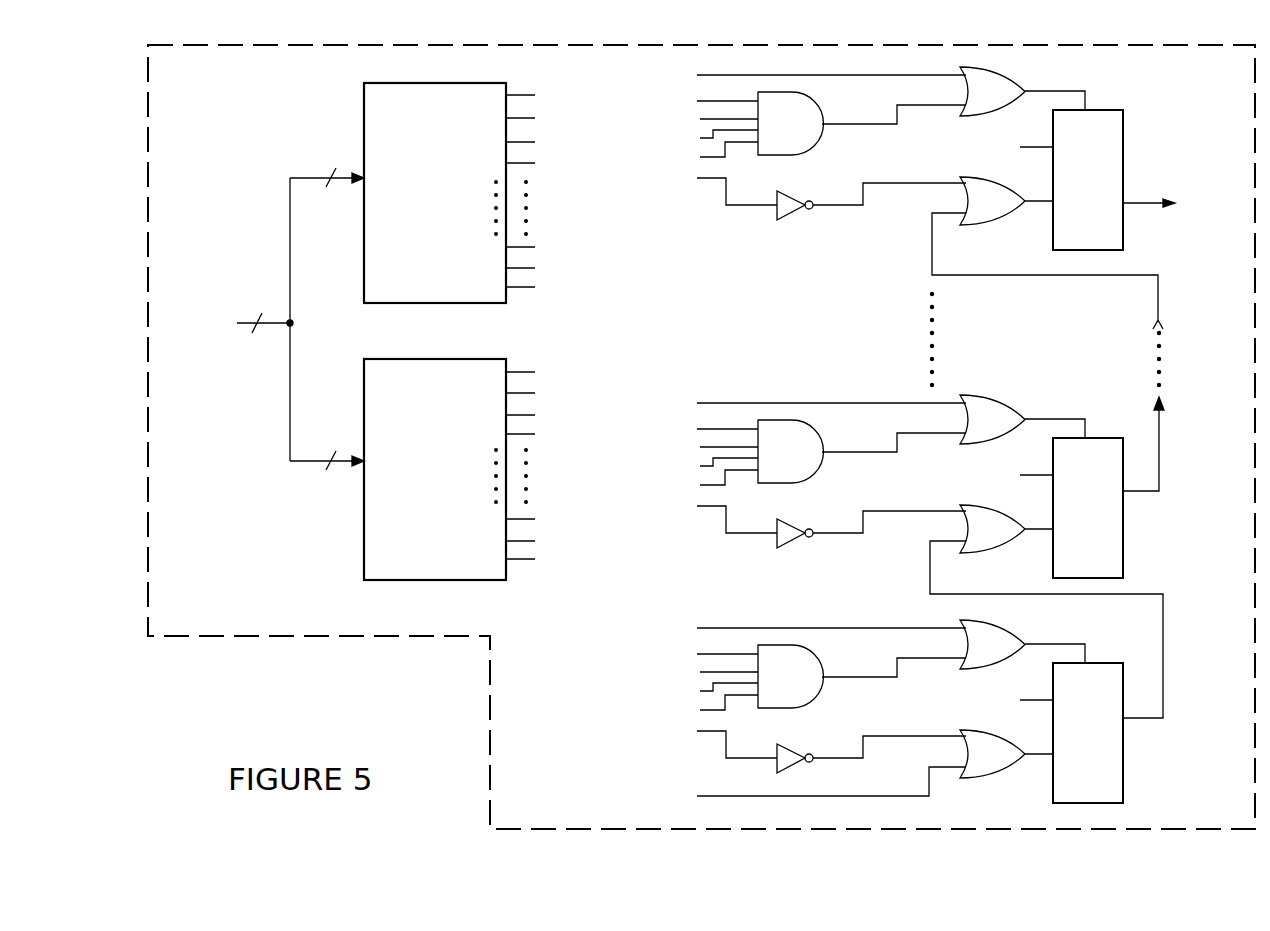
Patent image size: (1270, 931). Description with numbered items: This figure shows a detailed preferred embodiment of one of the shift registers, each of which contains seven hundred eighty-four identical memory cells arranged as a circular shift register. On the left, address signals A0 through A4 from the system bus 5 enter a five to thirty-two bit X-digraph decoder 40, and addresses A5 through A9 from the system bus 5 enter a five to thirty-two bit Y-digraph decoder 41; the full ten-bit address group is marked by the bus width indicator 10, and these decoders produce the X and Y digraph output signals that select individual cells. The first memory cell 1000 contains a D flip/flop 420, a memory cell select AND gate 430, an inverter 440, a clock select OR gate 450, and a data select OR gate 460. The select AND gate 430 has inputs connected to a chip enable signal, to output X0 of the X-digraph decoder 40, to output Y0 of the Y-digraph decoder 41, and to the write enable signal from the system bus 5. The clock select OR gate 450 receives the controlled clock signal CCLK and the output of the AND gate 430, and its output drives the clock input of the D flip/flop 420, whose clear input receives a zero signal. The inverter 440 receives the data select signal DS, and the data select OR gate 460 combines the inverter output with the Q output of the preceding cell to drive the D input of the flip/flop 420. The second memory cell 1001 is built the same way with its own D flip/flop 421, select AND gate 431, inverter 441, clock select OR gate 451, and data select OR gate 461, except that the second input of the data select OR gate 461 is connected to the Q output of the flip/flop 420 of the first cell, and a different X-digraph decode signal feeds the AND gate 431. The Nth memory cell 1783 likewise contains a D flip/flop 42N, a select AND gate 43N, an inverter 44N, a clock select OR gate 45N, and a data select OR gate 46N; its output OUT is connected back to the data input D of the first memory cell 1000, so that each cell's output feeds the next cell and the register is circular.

The 5 to 32 bit X-digraph decoder 40 is at (476, 303).
The 5 to 32 bit Y-digraph decoder 41 is at (470, 580).
The address bus A0-A9 10 is at (229, 319).
The system bus 5 is at (323, 319).
The D flip/flop 42N is at (1123, 147).
The memory cell select AND gate 43N is at (805, 155).
The inverter 44N is at (797, 212).
The clock select OR gate 45N is at (1010, 72).
The data select OR gate 46N is at (970, 225).
The D flip/flop 421 is at (1083, 508).
The memory cell select AND gate 431 is at (862, 458).
The inverter 441 is at (871, 550).
The clock select OR gate 451 is at (1022, 399).
The data select OR gate 461 is at (1006, 546).
The D flip/flop 420 is at (1088, 740).
The memory cell select AND gate 430 is at (862, 686).
The inverter 440 is at (871, 764).
The clock select OR gate 450 is at (1023, 635).
The data select OR gate 460 is at (1006, 777).
The Nth memory cell 1783 is at (938, 175).
The second memory cell 1001 is at (939, 472).
The first memory cell 1000 is at (939, 713).